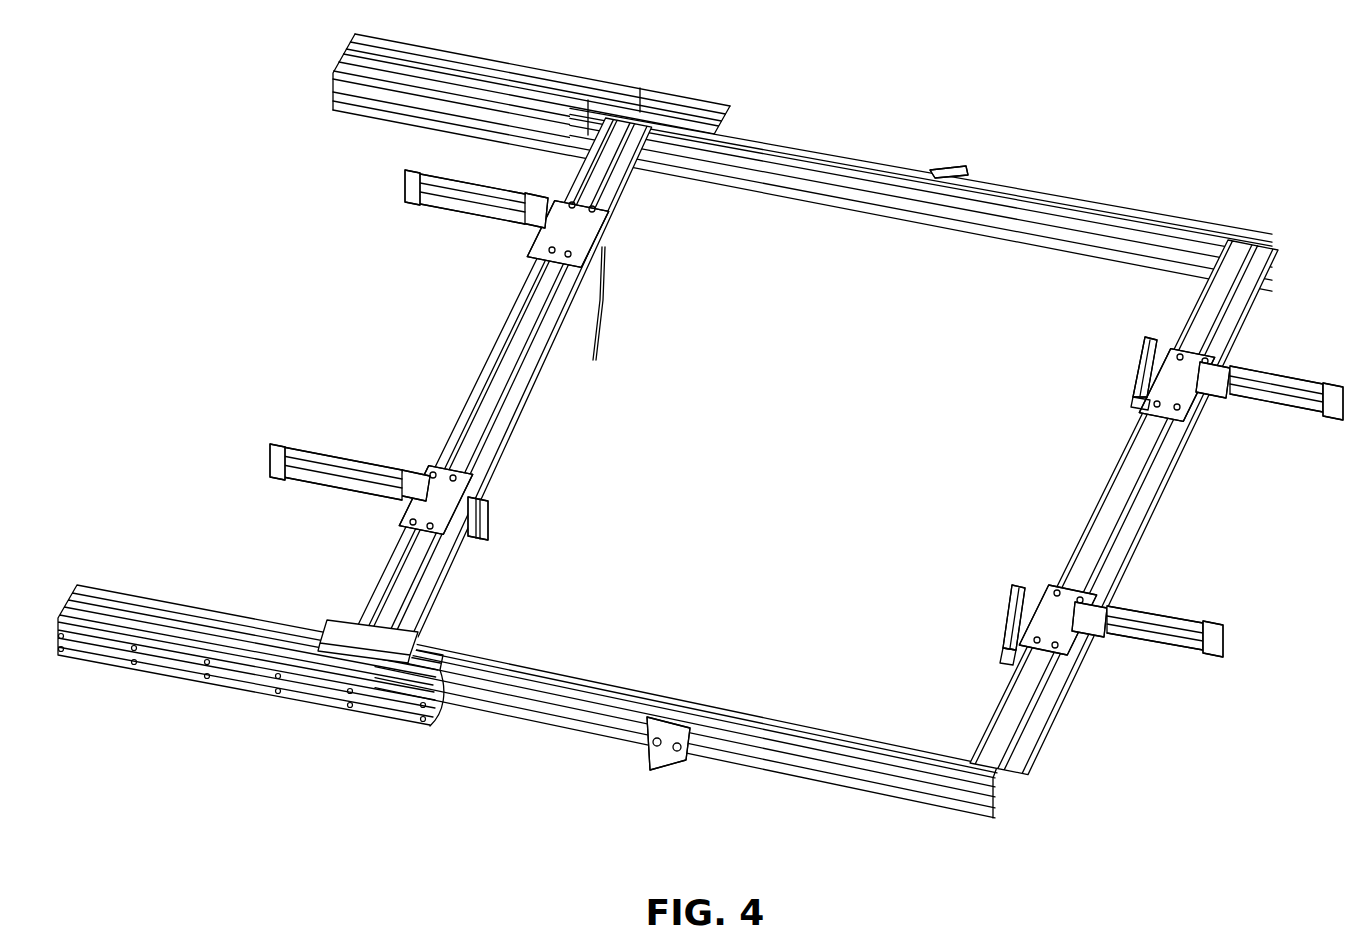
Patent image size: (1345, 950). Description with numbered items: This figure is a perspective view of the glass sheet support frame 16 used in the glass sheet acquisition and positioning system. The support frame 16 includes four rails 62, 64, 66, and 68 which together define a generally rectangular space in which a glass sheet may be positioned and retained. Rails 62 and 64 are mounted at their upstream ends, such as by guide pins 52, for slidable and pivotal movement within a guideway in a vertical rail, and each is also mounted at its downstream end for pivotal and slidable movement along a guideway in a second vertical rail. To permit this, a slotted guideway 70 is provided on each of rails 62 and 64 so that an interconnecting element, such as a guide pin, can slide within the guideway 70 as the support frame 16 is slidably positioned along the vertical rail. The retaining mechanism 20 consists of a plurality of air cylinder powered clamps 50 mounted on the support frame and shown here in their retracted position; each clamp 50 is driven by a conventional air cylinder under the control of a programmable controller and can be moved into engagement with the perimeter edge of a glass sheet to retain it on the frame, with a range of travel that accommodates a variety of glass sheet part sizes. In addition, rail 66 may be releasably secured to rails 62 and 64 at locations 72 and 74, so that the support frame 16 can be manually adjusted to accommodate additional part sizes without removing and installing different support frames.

The support frame 16 is at (668, 423).
The retaining mechanism 20 is at (493, 482).
The air cylinder powered clamps 50 is at (325, 457).
The guide pins 52 is at (955, 166).
The rail 62 is at (1065, 206).
The rail 64 is at (777, 720).
The rail 66 is at (403, 577).
The rail 68 is at (1020, 703).
The slotted guideway 70 is at (250, 675).
The location 72 is at (360, 638).
The location 74 is at (637, 108).